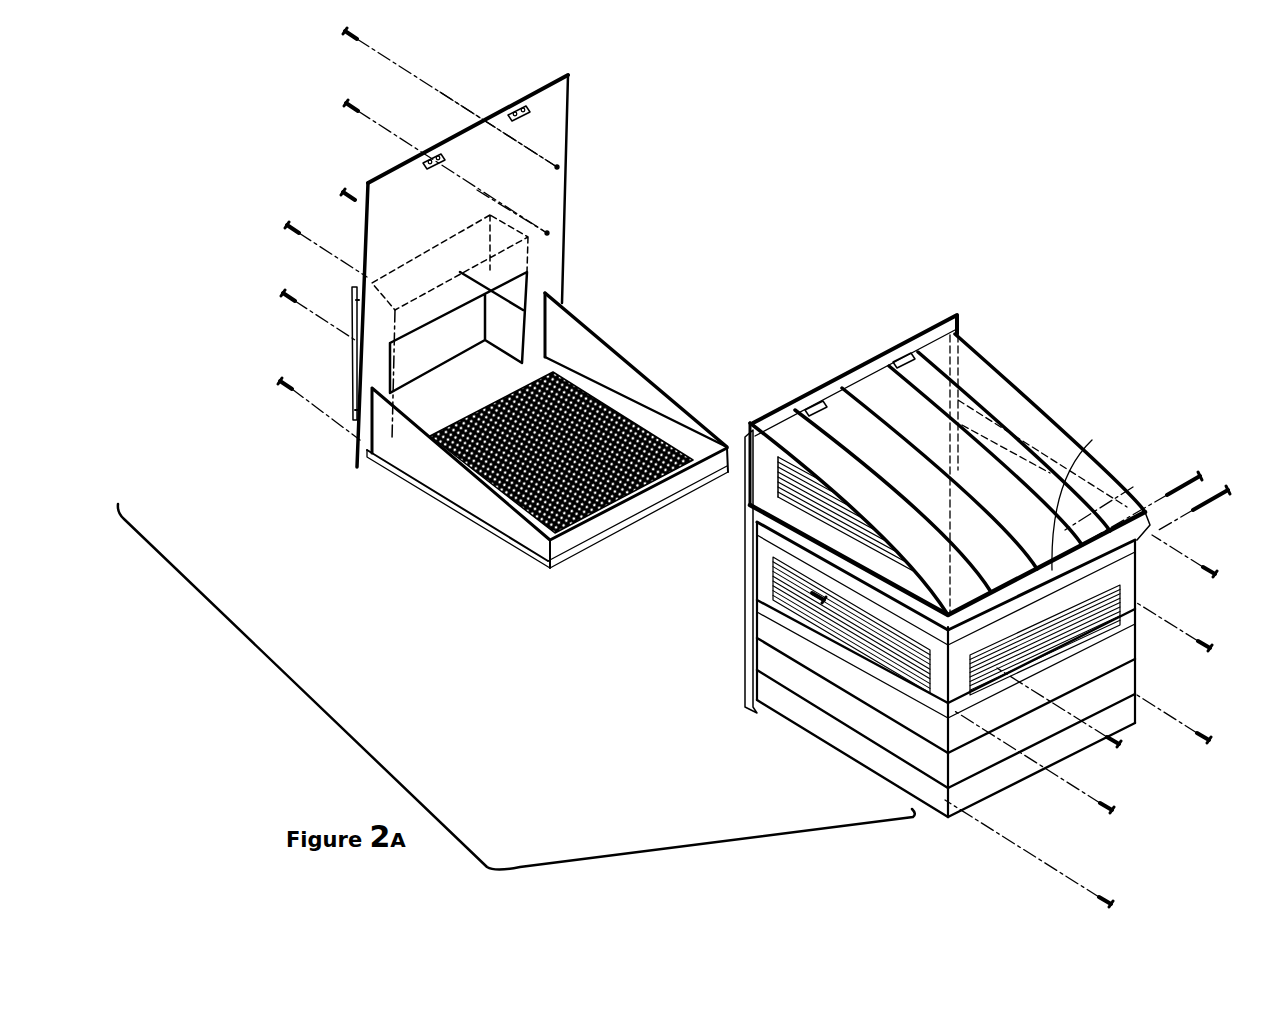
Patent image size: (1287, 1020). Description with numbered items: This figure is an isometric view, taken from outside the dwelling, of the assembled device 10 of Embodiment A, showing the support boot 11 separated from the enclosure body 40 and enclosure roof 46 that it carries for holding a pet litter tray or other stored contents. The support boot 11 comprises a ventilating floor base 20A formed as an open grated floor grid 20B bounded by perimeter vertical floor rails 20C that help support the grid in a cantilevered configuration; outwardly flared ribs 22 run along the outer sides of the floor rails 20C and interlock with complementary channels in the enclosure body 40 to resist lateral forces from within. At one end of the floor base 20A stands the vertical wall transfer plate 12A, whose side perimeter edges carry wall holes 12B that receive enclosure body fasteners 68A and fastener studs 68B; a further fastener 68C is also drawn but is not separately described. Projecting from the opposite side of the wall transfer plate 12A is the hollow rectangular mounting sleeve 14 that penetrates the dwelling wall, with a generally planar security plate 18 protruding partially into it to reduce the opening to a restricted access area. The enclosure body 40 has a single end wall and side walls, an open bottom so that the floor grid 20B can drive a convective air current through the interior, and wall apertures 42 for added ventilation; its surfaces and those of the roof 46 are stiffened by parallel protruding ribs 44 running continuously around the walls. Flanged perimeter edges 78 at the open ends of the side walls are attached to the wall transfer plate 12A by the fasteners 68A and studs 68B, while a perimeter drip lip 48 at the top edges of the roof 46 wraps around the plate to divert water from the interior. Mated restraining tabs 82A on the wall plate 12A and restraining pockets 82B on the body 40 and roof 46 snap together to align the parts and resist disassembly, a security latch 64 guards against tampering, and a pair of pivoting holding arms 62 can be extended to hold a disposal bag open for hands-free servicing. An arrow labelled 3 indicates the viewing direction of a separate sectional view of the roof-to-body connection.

The assembled device 10 is at (488, 710).
The support boot 11 is at (664, 233).
The wall transfer plate 12A is at (498, 162).
The wall holes 12B is at (562, 165).
The mounting sleeve 14 is at (353, 358).
The security plate 18 is at (502, 262).
The ventilating floor base 20A is at (547, 357).
The floor grid 20B is at (630, 380).
The perimeter vertical floor rails 20C is at (600, 363).
The protruding ribs 22 is at (430, 492).
The enclosure body 40 is at (942, 534).
The wall apertures 42 is at (757, 610).
The protruding ribs 44 is at (1008, 365).
The enclosure roof 46 is at (1012, 385).
The perimeter drip lip 48 is at (960, 322).
The holding arms 62 is at (1174, 492).
The security latch 64 is at (1075, 450).
The enclosure body fasteners 68A is at (1212, 566).
The enclosure body fastener studs 68B is at (282, 384).
The fastener 68C is at (822, 598).
The flanged perimeter edges 78 is at (750, 540).
The restraining tabs 82A is at (532, 112).
The restraining pockets 82B is at (905, 350).
The section line indicator 3 is at (1162, 483).